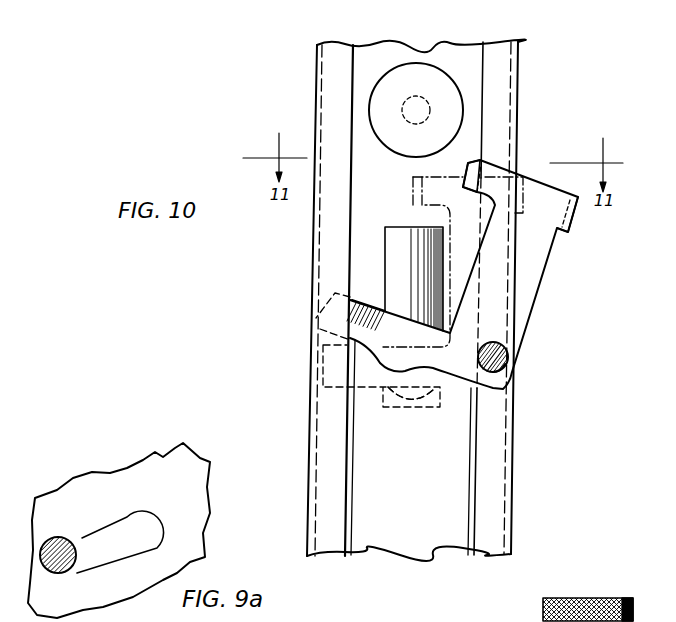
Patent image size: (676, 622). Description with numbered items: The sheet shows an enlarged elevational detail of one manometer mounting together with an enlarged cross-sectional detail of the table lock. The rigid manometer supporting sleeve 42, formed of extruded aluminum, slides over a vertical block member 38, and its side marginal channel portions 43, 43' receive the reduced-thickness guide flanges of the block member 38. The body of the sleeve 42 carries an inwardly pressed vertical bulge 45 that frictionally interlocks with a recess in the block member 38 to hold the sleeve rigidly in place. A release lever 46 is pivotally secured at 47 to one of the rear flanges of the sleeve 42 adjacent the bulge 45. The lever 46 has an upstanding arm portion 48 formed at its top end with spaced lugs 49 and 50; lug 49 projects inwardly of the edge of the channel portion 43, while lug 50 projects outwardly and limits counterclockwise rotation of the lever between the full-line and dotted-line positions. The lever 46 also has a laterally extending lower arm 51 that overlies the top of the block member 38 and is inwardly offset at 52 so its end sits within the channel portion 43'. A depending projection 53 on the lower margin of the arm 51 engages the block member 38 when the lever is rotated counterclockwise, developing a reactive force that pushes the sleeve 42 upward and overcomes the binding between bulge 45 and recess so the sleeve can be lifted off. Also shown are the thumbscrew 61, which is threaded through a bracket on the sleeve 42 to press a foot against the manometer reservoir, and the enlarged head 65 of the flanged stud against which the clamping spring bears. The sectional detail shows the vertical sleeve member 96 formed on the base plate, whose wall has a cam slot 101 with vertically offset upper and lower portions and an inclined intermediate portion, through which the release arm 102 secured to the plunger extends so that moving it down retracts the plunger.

In FIG. 10, the block member 38 is at (453, 497).
In FIG. 10, the manometer supporting sleeve 42 is at (372, 65).
In FIG. 10, the side marginal channel portion 43 is at (511, 287).
In FIG. 10, the side marginal channel portion 43' is at (328, 288).
In FIG. 10, the inwardly pressed vertical bulge 45 is at (402, 247).
In FIG. 10, the release lever 46 is at (520, 342).
In FIG. 10, the pivot 47 is at (506, 365).
In FIG. 10, the upstanding arm portion 48 is at (528, 271).
In FIG. 10, the lug 49 is at (474, 165).
In FIG. 10, the lug 50 is at (572, 224).
In FIG. 10, the lower arm 51 is at (365, 300).
In FIG. 10, the inward offset 52 is at (363, 322).
In FIG. 10, the depending projection 53 is at (397, 369).
In FIG. 10, the thumbscrew 61 is at (633, 607).
In FIG. 10, the enlarged head 65 is at (445, 75).
In FIG. 9A, the sleeve member 96 is at (120, 482).
In FIG. 9A, the cam slot 101 is at (115, 521).
In FIG. 9A, the release arm 102 is at (67, 570).